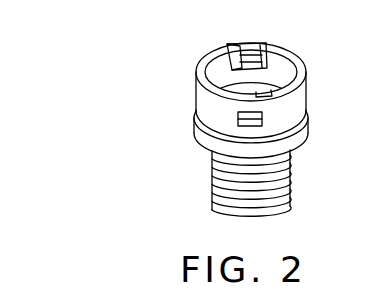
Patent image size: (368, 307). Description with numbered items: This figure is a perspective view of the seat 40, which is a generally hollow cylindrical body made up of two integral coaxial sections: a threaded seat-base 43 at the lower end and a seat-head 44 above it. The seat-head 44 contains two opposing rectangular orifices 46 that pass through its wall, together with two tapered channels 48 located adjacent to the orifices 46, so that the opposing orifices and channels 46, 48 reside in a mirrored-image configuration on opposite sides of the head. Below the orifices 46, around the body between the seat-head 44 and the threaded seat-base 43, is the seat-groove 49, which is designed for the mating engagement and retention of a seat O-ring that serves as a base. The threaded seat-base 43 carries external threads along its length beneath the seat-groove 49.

The seat 40 is at (115, 67).
The threaded seat-base 43 is at (304, 152).
The seat-head 44 is at (310, 48).
The rectangular orifice 46 is at (266, 45).
The tapered channel 48 is at (227, 46).
The seat-groove 49 is at (225, 132).